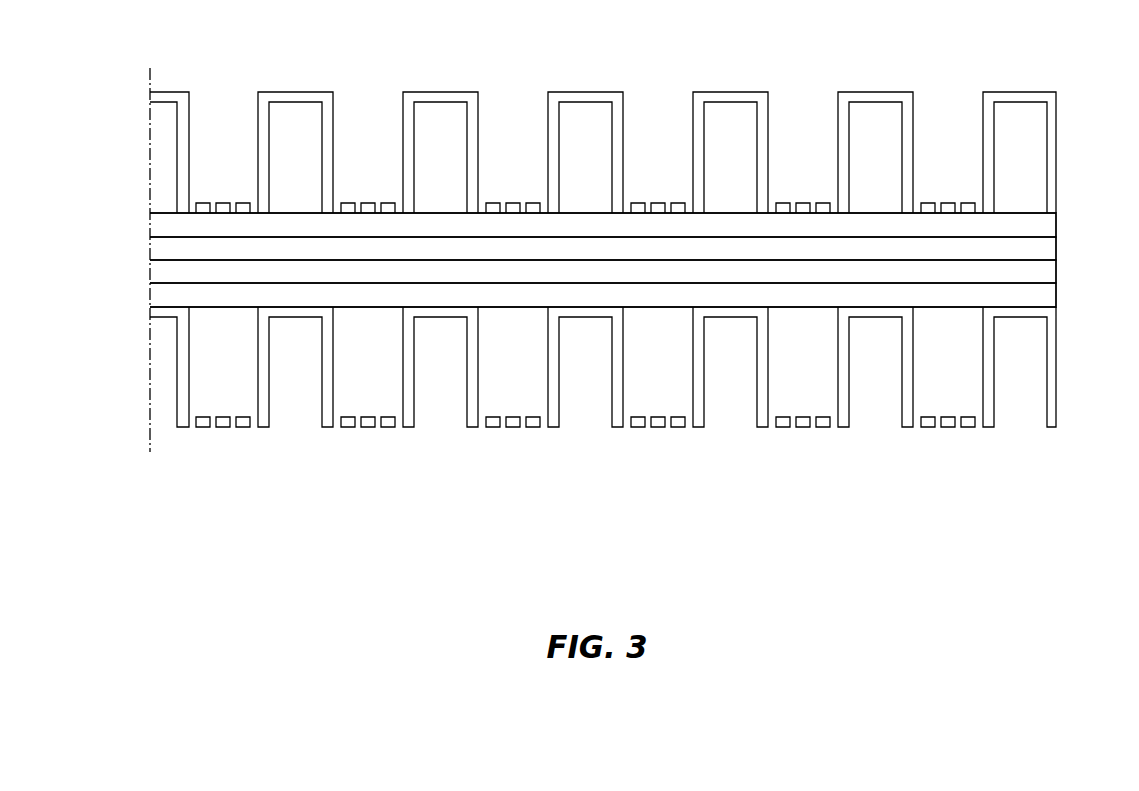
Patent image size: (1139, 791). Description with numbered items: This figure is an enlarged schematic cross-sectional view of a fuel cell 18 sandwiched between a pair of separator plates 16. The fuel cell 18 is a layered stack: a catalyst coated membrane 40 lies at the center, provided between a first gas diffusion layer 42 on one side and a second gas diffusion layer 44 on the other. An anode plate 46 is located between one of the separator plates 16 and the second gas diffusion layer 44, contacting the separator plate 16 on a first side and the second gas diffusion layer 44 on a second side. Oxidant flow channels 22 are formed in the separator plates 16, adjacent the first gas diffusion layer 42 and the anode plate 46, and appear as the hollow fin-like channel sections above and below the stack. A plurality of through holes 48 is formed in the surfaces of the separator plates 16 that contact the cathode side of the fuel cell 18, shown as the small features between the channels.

The separator plate 16 is at (258, 105).
The fuel cell 18 is at (586, 242).
The oxidant flow channel 22 is at (587, 112).
The catalyst coated membrane 40 is at (150, 250).
The first gas diffusion layer 42 is at (150, 228).
The second gas diffusion layer 44 is at (150, 273).
The anode plate 46 is at (150, 297).
The through hole 48 is at (806, 207).